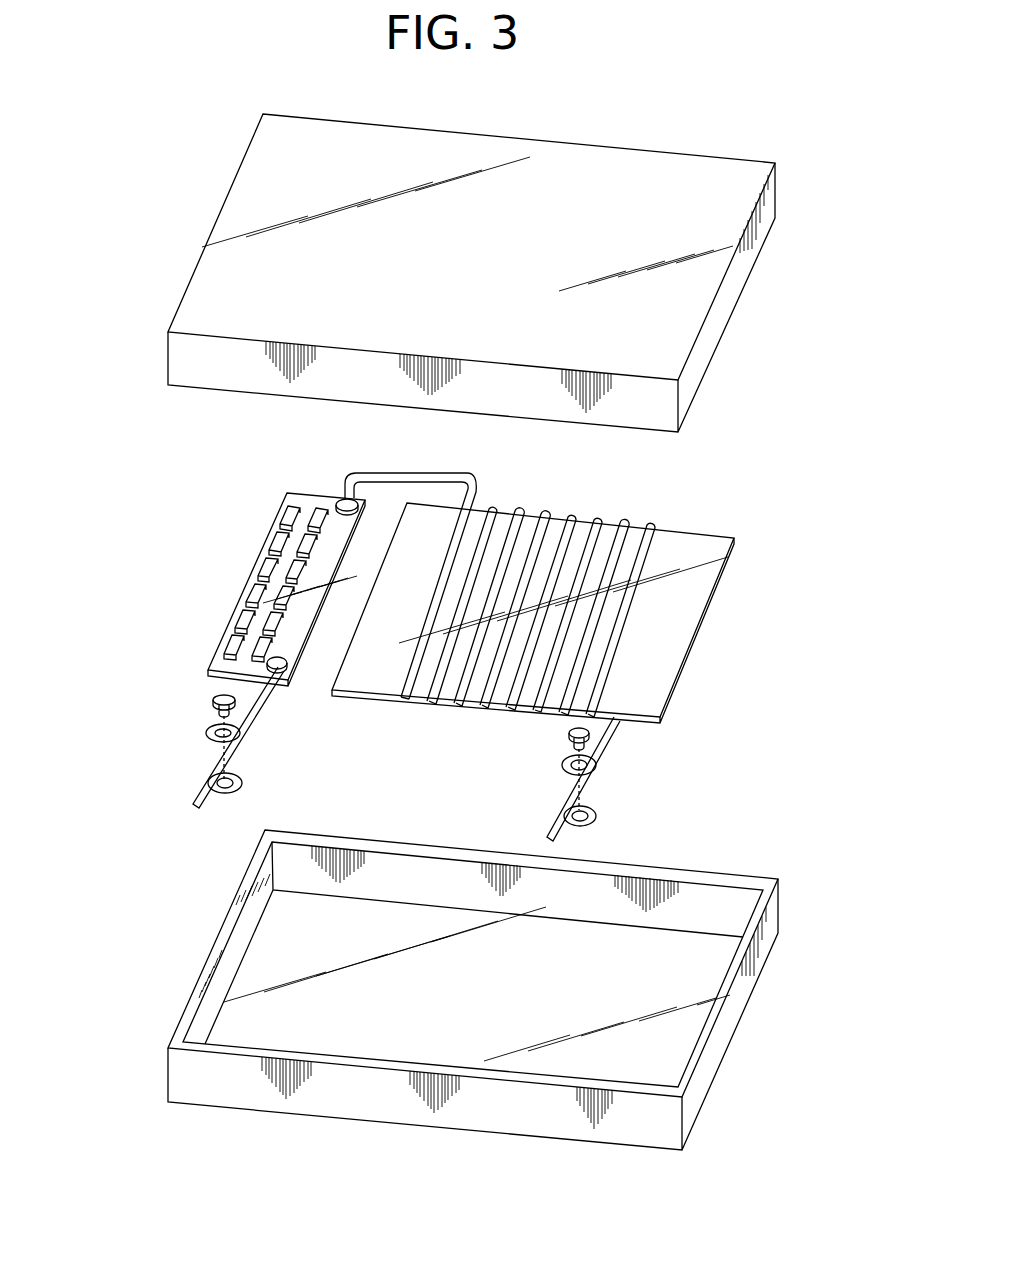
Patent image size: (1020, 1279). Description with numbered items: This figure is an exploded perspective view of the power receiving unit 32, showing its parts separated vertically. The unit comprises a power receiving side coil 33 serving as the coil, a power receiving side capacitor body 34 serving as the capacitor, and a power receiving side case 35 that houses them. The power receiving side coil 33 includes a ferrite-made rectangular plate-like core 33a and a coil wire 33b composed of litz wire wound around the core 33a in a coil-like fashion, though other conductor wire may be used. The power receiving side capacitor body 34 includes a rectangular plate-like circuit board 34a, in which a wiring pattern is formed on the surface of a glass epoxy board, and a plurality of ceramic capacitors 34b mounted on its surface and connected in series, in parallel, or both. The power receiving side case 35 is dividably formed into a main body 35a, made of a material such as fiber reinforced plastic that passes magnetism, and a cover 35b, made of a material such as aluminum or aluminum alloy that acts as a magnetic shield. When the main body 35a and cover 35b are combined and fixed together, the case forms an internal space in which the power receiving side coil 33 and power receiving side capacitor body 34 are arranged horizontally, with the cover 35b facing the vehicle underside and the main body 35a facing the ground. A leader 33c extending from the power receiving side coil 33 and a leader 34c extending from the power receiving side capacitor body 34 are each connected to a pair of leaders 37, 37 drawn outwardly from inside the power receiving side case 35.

The power receiving unit 32 is at (661, 127).
The power receiving side coil 33 is at (709, 529).
The core 33a is at (682, 603).
The coil wire 33b is at (598, 528).
The leader 33c is at (608, 742).
The power receiving side capacitor body 34 is at (312, 493).
The circuit board 34a is at (297, 628).
The ceramic capacitors 34b is at (242, 600).
The leader 34c is at (256, 723).
The power receiving side case 35 is at (125, 423).
The main body 35a is at (643, 1120).
The cover 35b is at (722, 178).
The leaders 37 is at (195, 790).